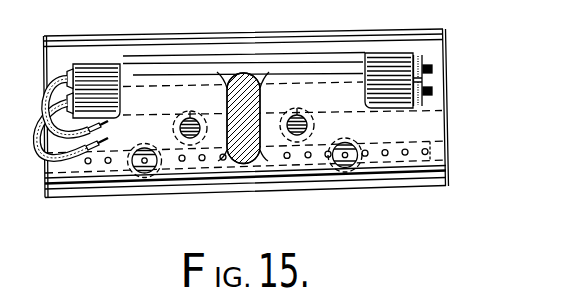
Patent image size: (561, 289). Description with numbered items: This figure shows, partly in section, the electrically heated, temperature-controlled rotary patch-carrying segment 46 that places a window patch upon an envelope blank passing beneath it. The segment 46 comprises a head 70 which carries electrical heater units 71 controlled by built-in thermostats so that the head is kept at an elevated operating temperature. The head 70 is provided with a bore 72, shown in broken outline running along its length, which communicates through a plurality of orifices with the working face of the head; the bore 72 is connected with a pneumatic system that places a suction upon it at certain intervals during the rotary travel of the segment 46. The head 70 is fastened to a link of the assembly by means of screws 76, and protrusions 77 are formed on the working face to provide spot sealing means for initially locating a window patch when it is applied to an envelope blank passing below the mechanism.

The segment 46 is at (449, 38).
The head 70 is at (447, 125).
The electrical heater units 71 is at (426, 87).
The bore 72 is at (447, 143).
The screws 76 is at (176, 134).
The protrusions 77 is at (147, 173).